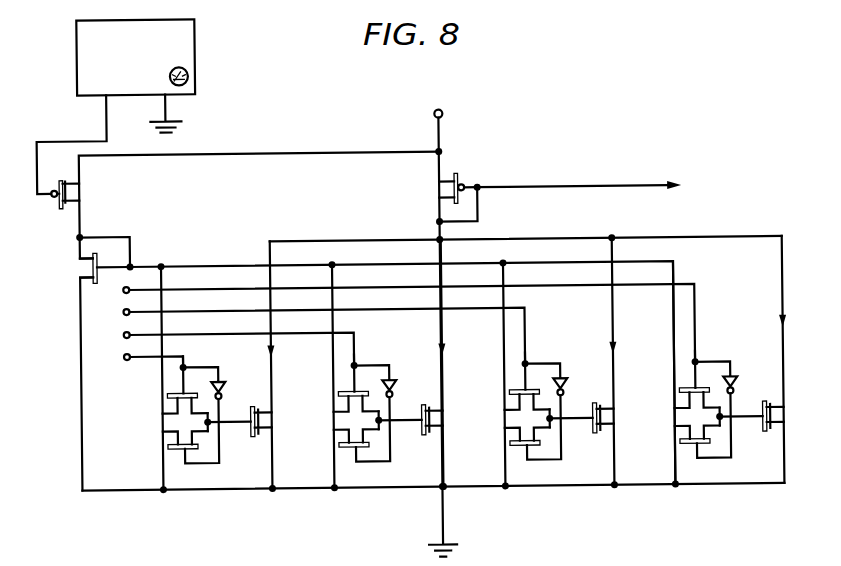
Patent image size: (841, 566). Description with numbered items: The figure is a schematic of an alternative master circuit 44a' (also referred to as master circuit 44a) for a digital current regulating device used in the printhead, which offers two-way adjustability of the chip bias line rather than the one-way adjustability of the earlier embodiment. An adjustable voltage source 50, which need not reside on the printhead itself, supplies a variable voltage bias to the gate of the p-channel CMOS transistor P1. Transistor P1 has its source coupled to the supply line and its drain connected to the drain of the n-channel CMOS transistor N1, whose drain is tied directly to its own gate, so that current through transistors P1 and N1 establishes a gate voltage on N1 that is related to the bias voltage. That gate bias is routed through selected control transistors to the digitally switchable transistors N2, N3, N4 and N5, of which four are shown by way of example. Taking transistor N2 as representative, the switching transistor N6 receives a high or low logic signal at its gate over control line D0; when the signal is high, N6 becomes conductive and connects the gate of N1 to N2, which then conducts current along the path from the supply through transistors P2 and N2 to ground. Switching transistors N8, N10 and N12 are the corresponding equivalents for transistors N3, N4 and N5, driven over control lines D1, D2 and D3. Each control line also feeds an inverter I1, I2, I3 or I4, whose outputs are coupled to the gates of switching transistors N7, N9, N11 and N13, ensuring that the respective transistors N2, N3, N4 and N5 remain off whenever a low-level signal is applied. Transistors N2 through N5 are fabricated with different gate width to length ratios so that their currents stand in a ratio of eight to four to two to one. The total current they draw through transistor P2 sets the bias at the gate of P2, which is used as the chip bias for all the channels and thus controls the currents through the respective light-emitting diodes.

The adjustable voltage source 50 is at (100, 20).
The master circuit 44a' is at (421, 296).
The master circuit 44a is at (421, 296).
The p-channel CMOS transistor P1 is at (74, 194).
The transistor P2 is at (447, 188).
The n-channel CMOS transistor N1 is at (95, 268).
The digitally switchable transistor N2 is at (251, 421).
The digitally switchable transistor N3 is at (422, 419).
The digitally switchable transistor N4 is at (593, 417).
The digitally switchable transistor N5 is at (763, 416).
The switching transistor N6 is at (175, 385).
The switching transistor N7 is at (175, 445).
The switching transistor N8 is at (346, 383).
The switching transistor N9 is at (346, 443).
The switching transistor N10 is at (512, 381).
The switching transistor N11 is at (513, 441).
The switching transistor N12 is at (683, 380).
The switching transistor N13 is at (683, 440).
The inverter I1 is at (214, 413).
The inverter I2 is at (385, 411).
The inverter I3 is at (556, 409).
The inverter I4 is at (726, 407).
The control line D0 is at (145, 358).
The control line D1 is at (231, 347).
The control line D2 is at (316, 334).
The control line D3 is at (401, 322).